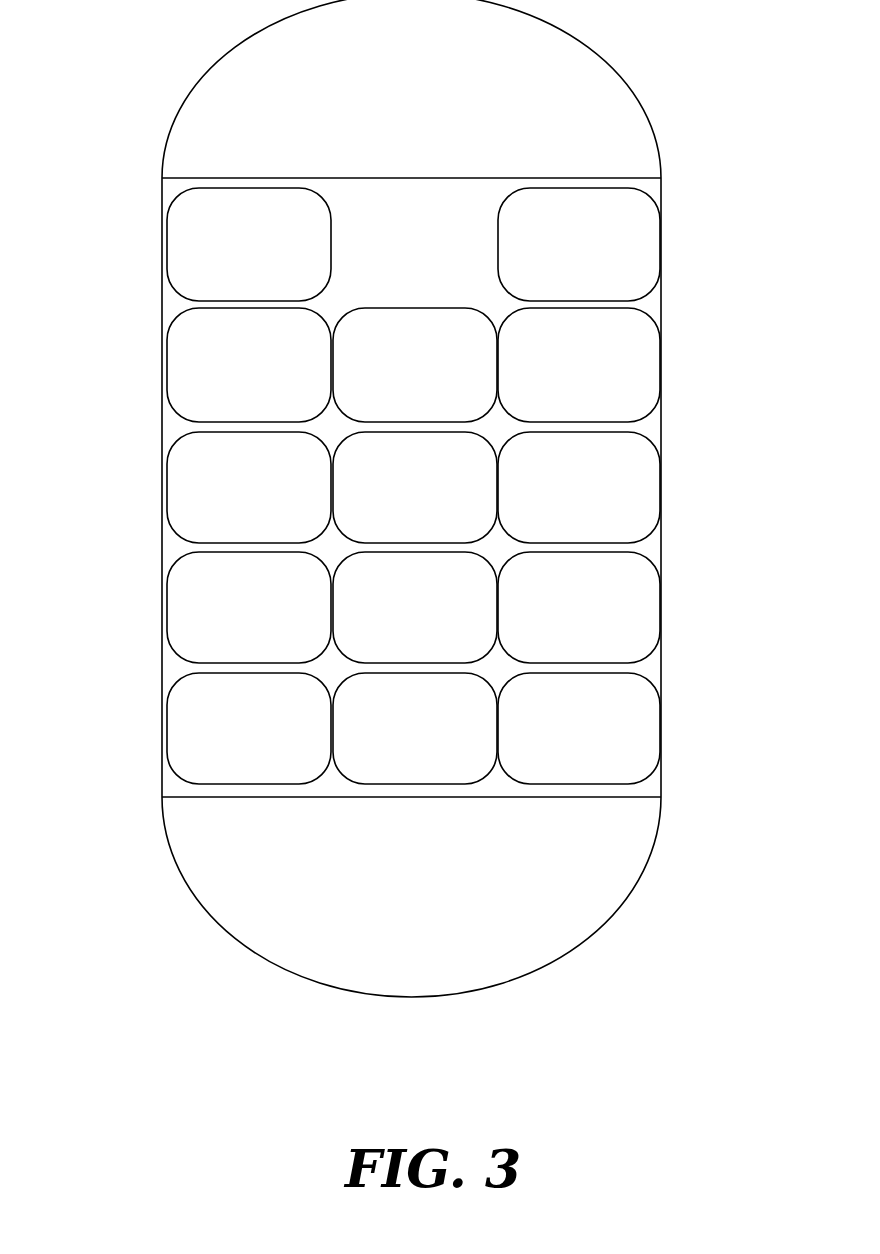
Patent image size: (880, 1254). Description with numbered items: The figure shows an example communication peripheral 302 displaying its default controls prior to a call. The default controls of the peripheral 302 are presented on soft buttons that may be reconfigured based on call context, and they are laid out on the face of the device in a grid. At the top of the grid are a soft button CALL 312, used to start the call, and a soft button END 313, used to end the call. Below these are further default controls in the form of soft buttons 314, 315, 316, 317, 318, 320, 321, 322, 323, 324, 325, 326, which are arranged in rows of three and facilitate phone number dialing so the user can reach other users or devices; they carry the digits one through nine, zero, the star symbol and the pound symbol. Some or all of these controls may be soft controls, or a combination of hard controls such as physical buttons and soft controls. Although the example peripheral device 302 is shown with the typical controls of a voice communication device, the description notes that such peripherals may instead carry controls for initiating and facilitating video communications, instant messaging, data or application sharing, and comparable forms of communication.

The communication peripheral 302 is at (160, 70).
The soft button CALL 312 is at (165, 195).
The soft button END 313 is at (656, 191).
The soft button 314 is at (166, 317).
The soft button 315 is at (466, 304).
The soft button 316 is at (656, 310).
The soft button 317 is at (172, 432).
The soft button 318 is at (337, 438).
The soft button 320 is at (656, 429).
The soft button 321 is at (172, 553).
The soft button 322 is at (337, 556).
The soft button 323 is at (655, 551).
The soft button 324 is at (165, 676).
The soft button 325 is at (397, 787).
The soft button 326 is at (645, 673).